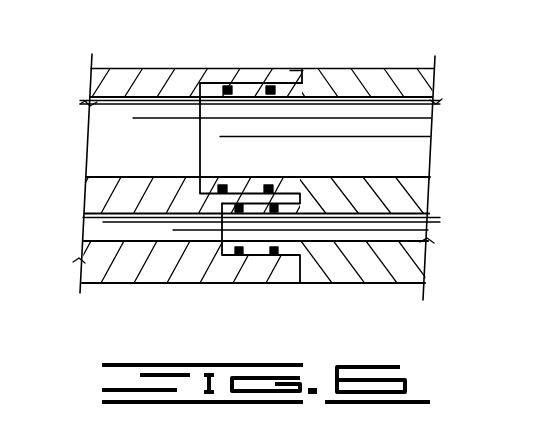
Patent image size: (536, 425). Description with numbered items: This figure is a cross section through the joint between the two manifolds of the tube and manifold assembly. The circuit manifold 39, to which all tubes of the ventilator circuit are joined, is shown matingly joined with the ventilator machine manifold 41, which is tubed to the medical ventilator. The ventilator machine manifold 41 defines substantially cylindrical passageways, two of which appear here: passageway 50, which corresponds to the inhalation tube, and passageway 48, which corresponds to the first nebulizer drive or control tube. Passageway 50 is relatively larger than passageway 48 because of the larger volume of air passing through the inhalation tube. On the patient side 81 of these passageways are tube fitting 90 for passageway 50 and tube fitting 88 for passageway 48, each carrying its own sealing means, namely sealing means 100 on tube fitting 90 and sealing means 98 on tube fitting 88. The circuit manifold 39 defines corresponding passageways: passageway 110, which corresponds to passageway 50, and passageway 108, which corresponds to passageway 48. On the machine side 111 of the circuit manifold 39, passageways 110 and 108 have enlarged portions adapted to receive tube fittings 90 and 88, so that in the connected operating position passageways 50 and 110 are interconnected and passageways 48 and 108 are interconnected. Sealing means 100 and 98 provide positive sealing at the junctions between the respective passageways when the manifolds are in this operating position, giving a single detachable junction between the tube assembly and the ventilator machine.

The circuit manifold 39 is at (112, 80).
The ventilator machine manifold 41 is at (372, 81).
The passageway 48 is at (427, 218).
The passageway 50 is at (433, 103).
The patient side 81 is at (294, 82).
The tube fitting 88 is at (222, 282).
The tube fitting 90 is at (205, 83).
The sealing means 98 is at (277, 256).
The sealing means 100 is at (270, 86).
The passageway 108 is at (95, 241).
The passageway 110 is at (107, 99).
The machine side 111 is at (305, 71).